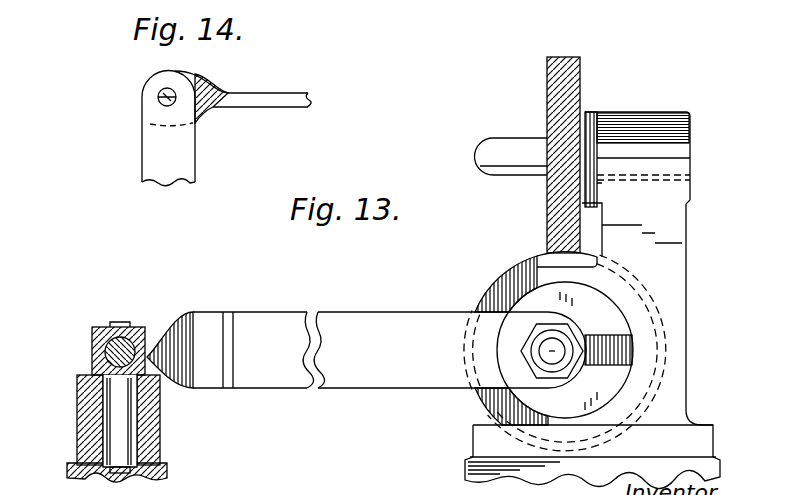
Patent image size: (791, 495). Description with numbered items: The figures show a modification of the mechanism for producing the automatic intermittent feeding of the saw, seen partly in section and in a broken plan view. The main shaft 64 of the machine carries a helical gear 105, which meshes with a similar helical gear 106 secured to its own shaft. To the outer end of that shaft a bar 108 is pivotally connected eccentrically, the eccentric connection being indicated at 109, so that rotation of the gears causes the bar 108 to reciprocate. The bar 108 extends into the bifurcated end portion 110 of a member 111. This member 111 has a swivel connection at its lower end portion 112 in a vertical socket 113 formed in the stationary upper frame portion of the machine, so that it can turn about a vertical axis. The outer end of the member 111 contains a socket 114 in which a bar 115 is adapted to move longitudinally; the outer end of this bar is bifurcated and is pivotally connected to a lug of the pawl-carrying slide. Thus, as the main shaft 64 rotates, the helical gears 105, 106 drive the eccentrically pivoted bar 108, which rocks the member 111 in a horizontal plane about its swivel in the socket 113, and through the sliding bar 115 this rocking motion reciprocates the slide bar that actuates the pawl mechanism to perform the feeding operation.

In FIG. 13, the main shaft 64 is at (515, 160).
In FIG. 13, the helical gear 105 is at (547, 82).
In FIG. 13, the helical gear 106 is at (512, 272).
In FIG. 14, the bar 108 is at (283, 100).
In FIG. 13, the bar 108 is at (397, 368).
In FIG. 13, the eccentric pivotal connection 109 is at (552, 351).
In FIG. 14, the bifurcated end portion 110 is at (147, 100).
In FIG. 14, the member 111 is at (185, 163).
In FIG. 13, the member 111 is at (152, 455).
In FIG. 13, the lower end portion 112 is at (137, 418).
In FIG. 13, the vertical socket 113 is at (98, 438).
In FIG. 13, the socket 114 is at (92, 337).
In FIG. 13, the bar 115 is at (107, 353).